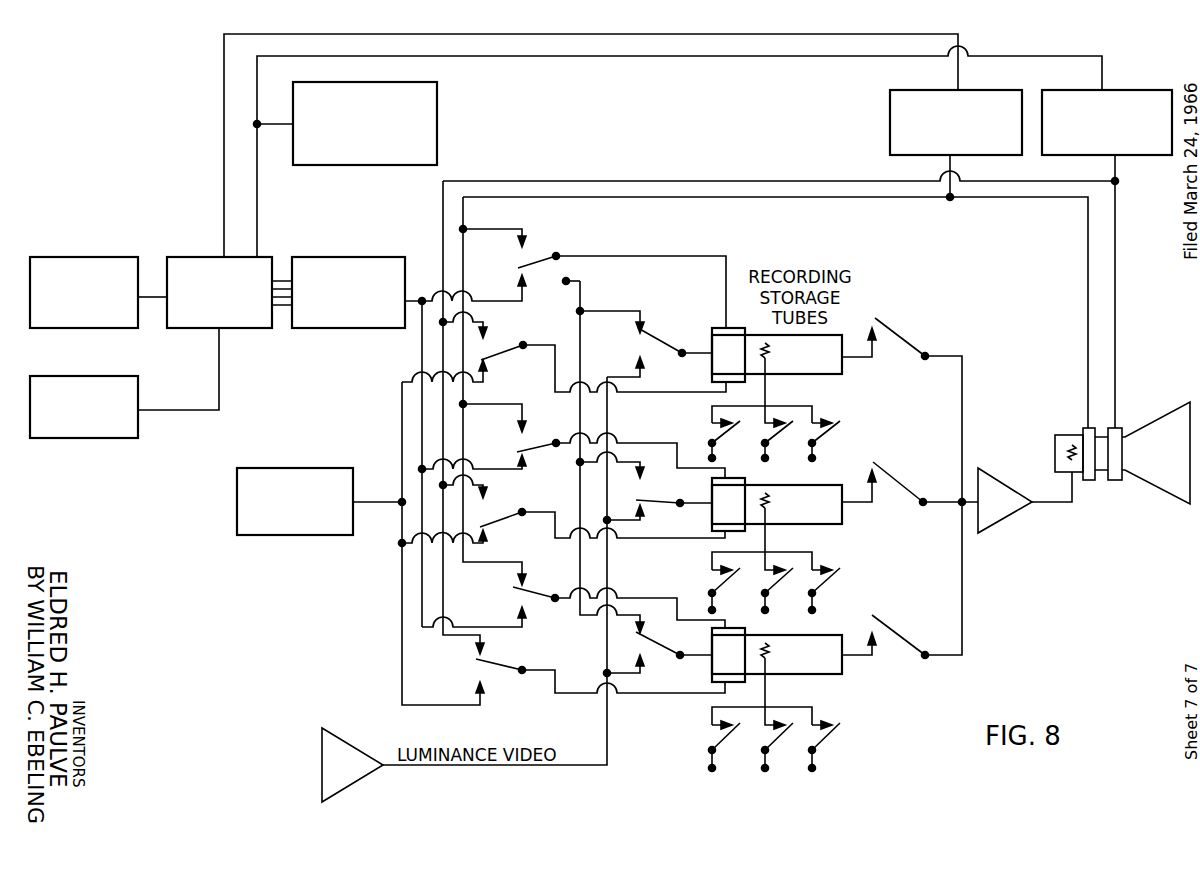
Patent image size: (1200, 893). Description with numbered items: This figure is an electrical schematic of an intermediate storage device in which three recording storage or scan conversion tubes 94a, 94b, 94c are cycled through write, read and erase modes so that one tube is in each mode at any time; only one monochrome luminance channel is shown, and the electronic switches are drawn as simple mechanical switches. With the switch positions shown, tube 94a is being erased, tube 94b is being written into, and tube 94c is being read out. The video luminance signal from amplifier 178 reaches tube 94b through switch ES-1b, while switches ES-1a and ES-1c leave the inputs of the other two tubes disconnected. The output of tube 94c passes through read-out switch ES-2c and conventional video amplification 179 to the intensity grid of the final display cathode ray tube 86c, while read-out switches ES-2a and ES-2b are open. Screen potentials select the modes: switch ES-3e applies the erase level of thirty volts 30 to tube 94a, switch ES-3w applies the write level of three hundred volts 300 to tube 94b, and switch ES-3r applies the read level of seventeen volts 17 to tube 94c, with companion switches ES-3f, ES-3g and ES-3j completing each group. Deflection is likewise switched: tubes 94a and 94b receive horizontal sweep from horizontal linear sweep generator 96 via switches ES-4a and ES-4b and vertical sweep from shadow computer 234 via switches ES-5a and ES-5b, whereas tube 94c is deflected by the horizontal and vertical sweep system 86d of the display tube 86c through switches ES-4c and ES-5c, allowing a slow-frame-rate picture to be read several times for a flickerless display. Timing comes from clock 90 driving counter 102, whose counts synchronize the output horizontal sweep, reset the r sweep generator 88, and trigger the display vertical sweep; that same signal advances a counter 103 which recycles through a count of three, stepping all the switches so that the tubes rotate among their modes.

The clock 90 is at (75, 257).
The counter 102 is at (193, 257).
The horizontal linear sweep generator 96 is at (325, 257).
The counter 103 is at (437, 96).
The r sweep generator 88 is at (108, 438).
The shadow computer 234 is at (330, 535).
The horizontal and vertical sweep system 86d is at (1031, 113).
The recording storage tube 94a is at (815, 374).
The recording storage tube 94b is at (815, 524).
The recording storage tube 94c is at (815, 674).
The amplifier 178 is at (352, 781).
The video amplification 179 is at (1000, 518).
The final display cathode ray tube 86c is at (1150, 485).
The read level potential 17 is at (724, 611).
The write level potential 300 is at (783, 611).
The erase level potential 30 is at (824, 611).
The electronic switch ES-4a is at (537, 263).
The electronic switch ES-4b is at (535, 448).
The electronic switch ES-4c is at (535, 567).
The electronic switch ES-5a is at (493, 355).
The electronic switch ES-5b is at (498, 518).
The electronic switch ES-5c is at (501, 660).
The electronic switch ES-1a is at (657, 332).
The electronic switch ES-1b is at (668, 499).
The electronic switch ES-1c is at (662, 659).
The read-out switch ES-2a is at (900, 344).
The read-out switch ES-2b is at (905, 478).
The read-out switch ES-2c is at (905, 625).
The electronic switch ES-3f is at (738, 432).
The electronic switch ES-3e is at (829, 442).
The electronic switch ES-3g is at (721, 586).
The electronic switch ES-3w is at (818, 582).
The electronic switch ES-3r is at (716, 752).
The electronic switch ES-3j is at (822, 741).